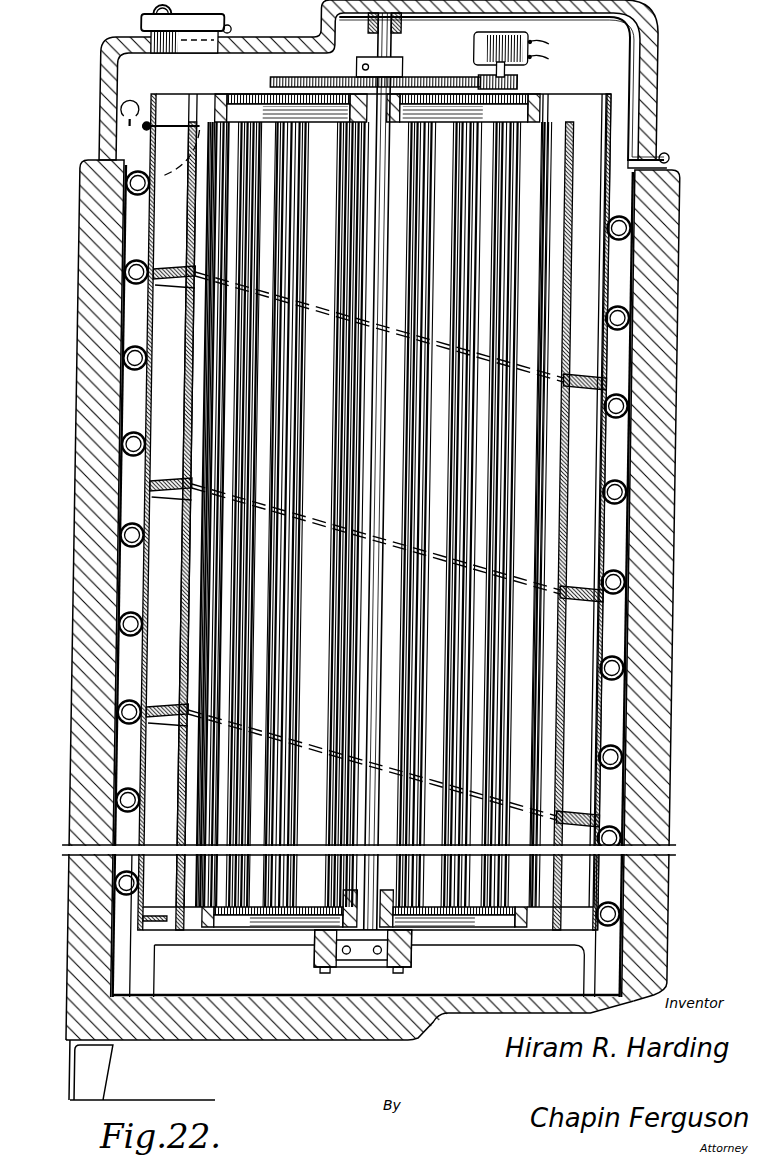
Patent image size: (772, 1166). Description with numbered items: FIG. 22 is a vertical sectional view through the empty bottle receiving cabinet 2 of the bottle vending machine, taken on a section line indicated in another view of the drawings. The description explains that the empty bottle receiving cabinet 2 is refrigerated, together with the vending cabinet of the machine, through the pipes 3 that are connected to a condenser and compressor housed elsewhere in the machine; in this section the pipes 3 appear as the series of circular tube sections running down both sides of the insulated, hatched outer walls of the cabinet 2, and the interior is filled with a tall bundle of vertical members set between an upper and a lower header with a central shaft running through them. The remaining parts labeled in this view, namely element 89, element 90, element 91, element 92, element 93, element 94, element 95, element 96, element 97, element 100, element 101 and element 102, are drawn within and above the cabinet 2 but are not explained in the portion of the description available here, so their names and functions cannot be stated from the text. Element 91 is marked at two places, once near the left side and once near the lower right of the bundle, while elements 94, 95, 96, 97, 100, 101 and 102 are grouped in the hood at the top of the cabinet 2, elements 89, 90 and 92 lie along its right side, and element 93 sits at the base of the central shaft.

The empty bottle receiving cabinet 2 is at (663, 633).
The pipes 3 is at (115, 625).
The inner liner 89 is at (604, 537).
The cooling coil 90 is at (604, 427).
The baffle plate 91 is at (180, 488).
The inner wall 92 is at (567, 712).
The bottom bearing 93 is at (416, 947).
The rack 94 is at (448, 79).
The pinion 95 is at (513, 89).
The motor 96 is at (478, 47).
The wires 97 is at (540, 59).
The valve 100 is at (160, 122).
The filler neck 101 is at (203, 45).
The cap 102 is at (224, 22).